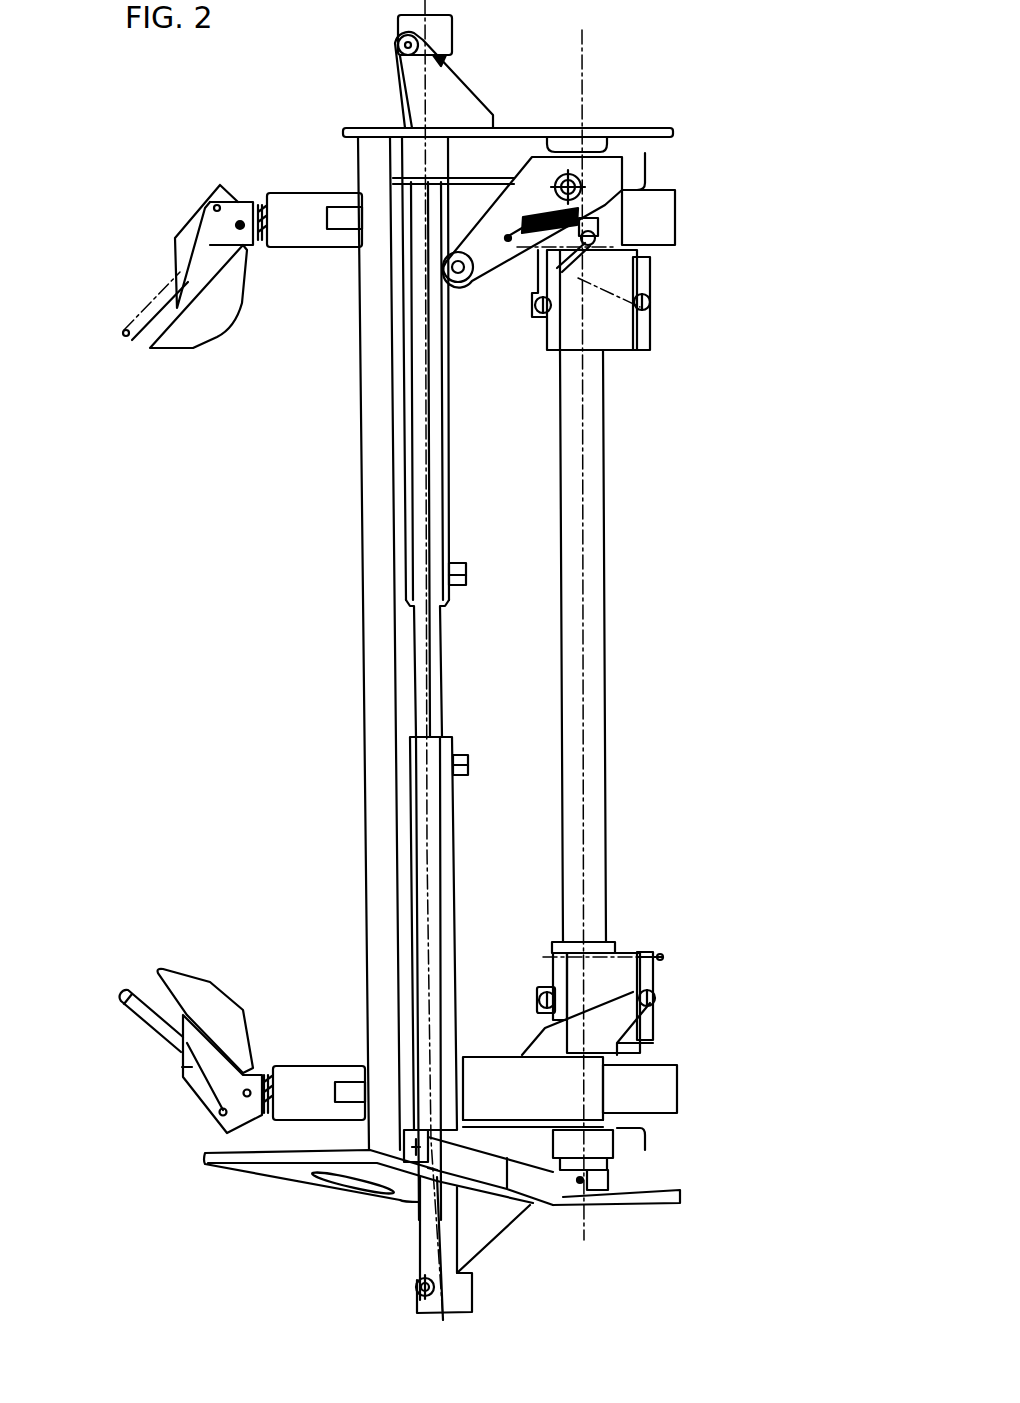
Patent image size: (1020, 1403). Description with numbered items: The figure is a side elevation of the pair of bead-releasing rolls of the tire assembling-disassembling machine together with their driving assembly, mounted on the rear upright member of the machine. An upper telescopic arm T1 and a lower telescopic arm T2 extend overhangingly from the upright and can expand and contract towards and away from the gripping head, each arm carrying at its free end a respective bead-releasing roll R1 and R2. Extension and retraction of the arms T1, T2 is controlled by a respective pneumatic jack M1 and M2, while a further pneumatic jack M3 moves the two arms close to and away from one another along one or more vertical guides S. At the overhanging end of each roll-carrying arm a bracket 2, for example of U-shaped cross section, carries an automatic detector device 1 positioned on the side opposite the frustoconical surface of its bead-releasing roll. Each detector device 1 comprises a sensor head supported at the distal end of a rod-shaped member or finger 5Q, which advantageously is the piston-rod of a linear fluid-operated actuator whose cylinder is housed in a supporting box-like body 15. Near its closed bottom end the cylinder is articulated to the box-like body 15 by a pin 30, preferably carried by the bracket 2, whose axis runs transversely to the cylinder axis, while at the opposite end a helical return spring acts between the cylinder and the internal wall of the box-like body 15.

The automatic detector device 1 is at (172, 650).
The bracket 2 is at (220, 222).
The pin 30 is at (240, 220).
The box-like body 15 is at (172, 238).
The rod-shaped member or finger 5Q is at (147, 317).
The bead-releasing roll R1 is at (215, 307).
The bead-releasing roll R2 is at (220, 1005).
The upper telescopic arm T1 is at (310, 232).
The lower telescopic arm T2 is at (313, 1083).
The vertical guide S is at (432, 518).
The pneumatic jack M1 is at (607, 328).
The pneumatic jack M2 is at (623, 968).
The pneumatic jack M3 is at (445, 872).